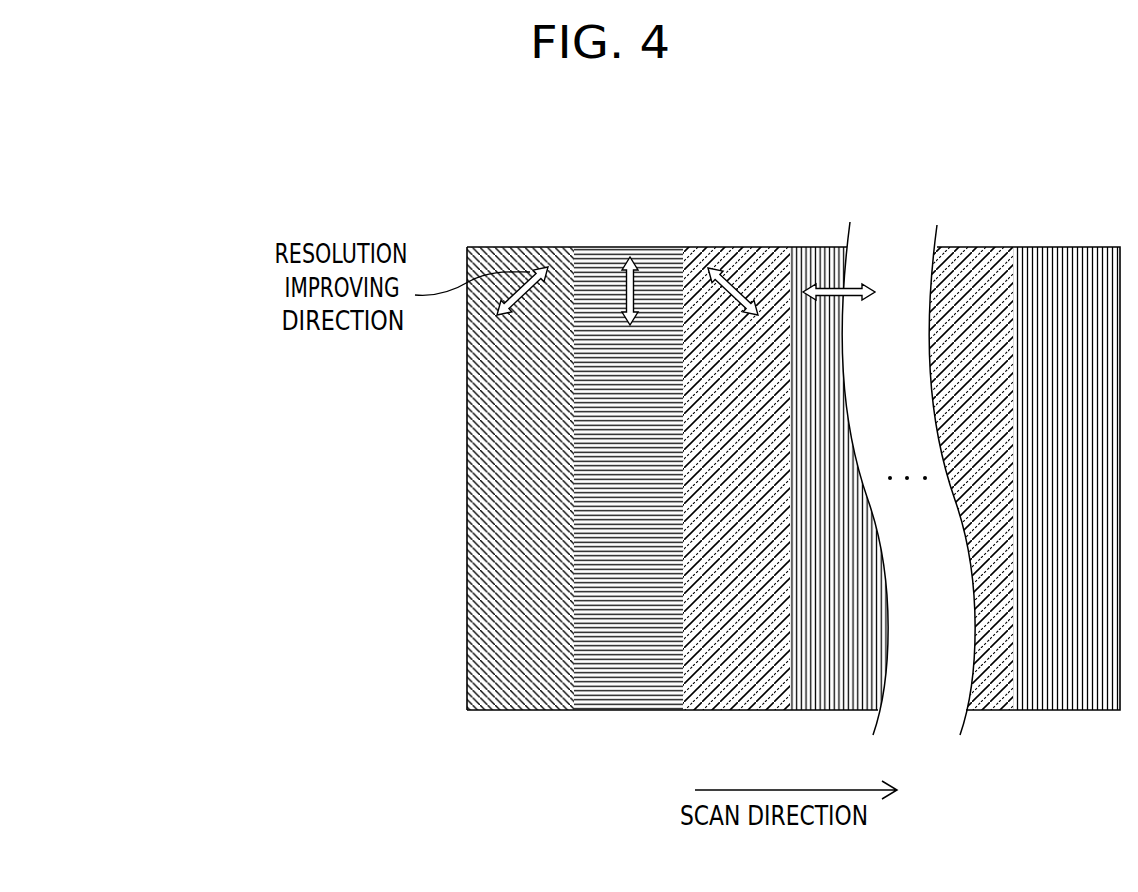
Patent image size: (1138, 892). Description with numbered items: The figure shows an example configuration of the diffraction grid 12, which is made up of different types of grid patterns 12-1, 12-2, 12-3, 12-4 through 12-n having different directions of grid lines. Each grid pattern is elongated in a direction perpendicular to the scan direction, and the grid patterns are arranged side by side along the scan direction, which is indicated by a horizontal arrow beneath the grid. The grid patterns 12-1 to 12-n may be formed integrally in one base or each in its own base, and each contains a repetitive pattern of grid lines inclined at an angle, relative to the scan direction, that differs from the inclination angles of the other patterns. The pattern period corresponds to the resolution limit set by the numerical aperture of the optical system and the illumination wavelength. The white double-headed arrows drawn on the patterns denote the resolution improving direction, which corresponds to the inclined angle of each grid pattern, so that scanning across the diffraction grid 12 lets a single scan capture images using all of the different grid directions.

The diffraction grid 12 is at (518, 752).
The grid pattern 12-1 is at (527, 243).
The grid pattern 12-2 is at (634, 243).
The grid pattern 12-3 is at (740, 243).
The grid pattern 12-4 is at (822, 243).
The grid pattern 12-n is at (1067, 243).